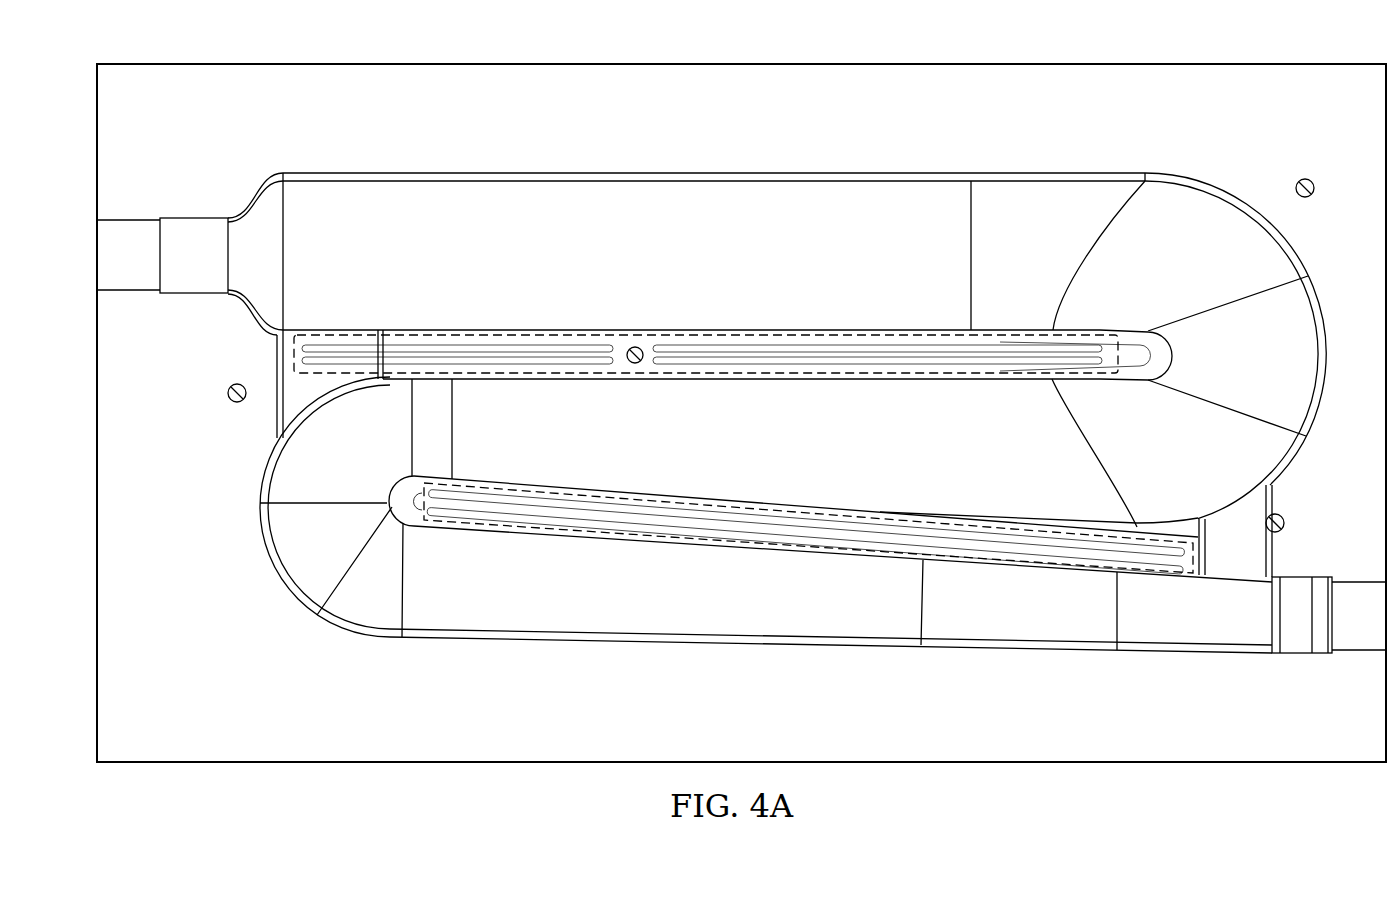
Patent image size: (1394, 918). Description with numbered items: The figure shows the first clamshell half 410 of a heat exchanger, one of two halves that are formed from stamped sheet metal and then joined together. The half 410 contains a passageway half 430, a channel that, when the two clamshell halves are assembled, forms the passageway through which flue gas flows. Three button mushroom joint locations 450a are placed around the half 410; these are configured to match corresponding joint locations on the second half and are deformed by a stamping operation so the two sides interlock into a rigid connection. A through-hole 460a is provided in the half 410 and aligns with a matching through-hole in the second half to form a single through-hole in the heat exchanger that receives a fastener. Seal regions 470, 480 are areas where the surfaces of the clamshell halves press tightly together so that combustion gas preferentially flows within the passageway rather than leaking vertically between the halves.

The first clamshell half 410 is at (249, 62).
The passageway half 430 is at (627, 173).
The button mushroom joint location 450a is at (1306, 179).
The through-hole 460a is at (632, 347).
The seal region 470 is at (727, 332).
The seal region 480 is at (578, 528).